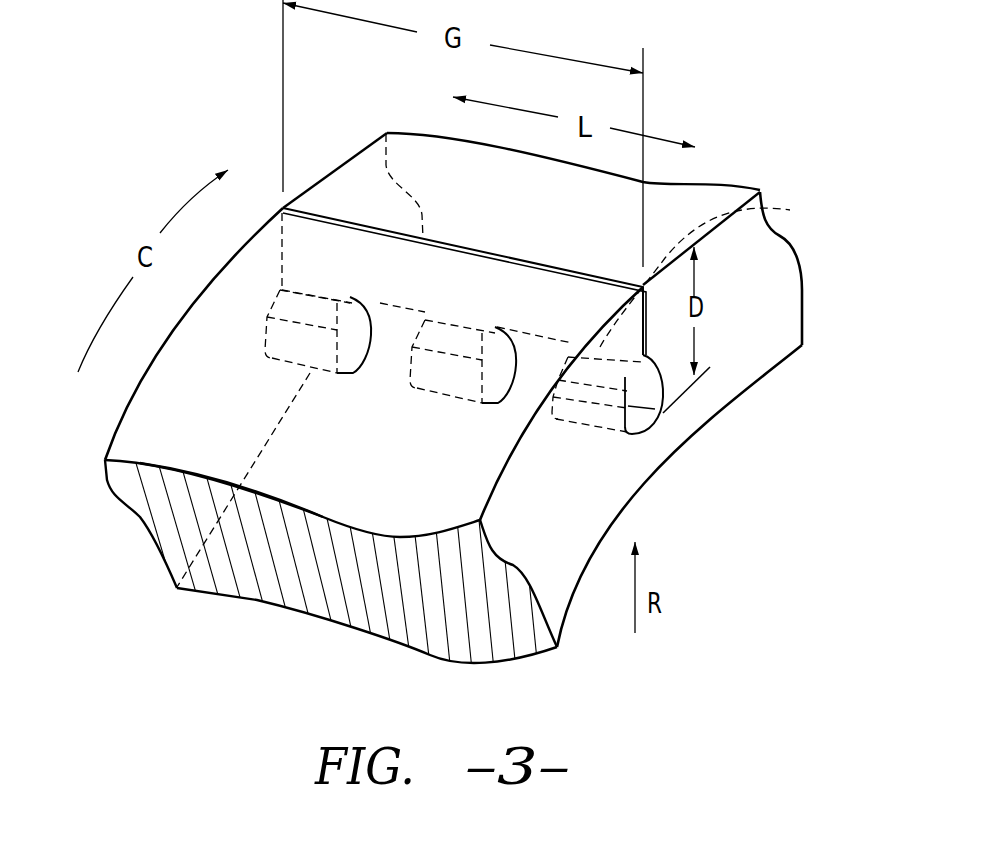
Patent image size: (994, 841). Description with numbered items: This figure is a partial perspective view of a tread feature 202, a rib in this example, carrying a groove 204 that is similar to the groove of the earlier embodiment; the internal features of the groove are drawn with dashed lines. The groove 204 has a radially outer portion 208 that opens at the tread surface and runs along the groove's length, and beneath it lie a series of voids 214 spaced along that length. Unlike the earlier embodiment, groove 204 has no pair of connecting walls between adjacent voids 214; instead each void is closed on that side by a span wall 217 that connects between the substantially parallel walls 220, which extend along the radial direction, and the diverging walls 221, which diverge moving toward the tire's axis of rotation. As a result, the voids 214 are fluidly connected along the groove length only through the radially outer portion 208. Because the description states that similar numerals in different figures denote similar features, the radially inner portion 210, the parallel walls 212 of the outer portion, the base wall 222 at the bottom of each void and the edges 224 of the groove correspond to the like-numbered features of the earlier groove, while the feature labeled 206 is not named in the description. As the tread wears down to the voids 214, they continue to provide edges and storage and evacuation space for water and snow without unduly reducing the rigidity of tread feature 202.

The tread feature 202 is at (160, 162).
The groove 204 is at (613, 258).
The side face 206 is at (125, 406).
The radially outer portion 208 is at (280, 240).
The front edge of top face 210 is at (243, 360).
The slot 212 is at (493, 277).
The void 214 is at (460, 337).
The span wall 217 is at (353, 350).
The walls 220 is at (292, 345).
The diverging walls 221 is at (293, 313).
The slot bottom 222 is at (642, 425).
The rail 224 is at (335, 217).